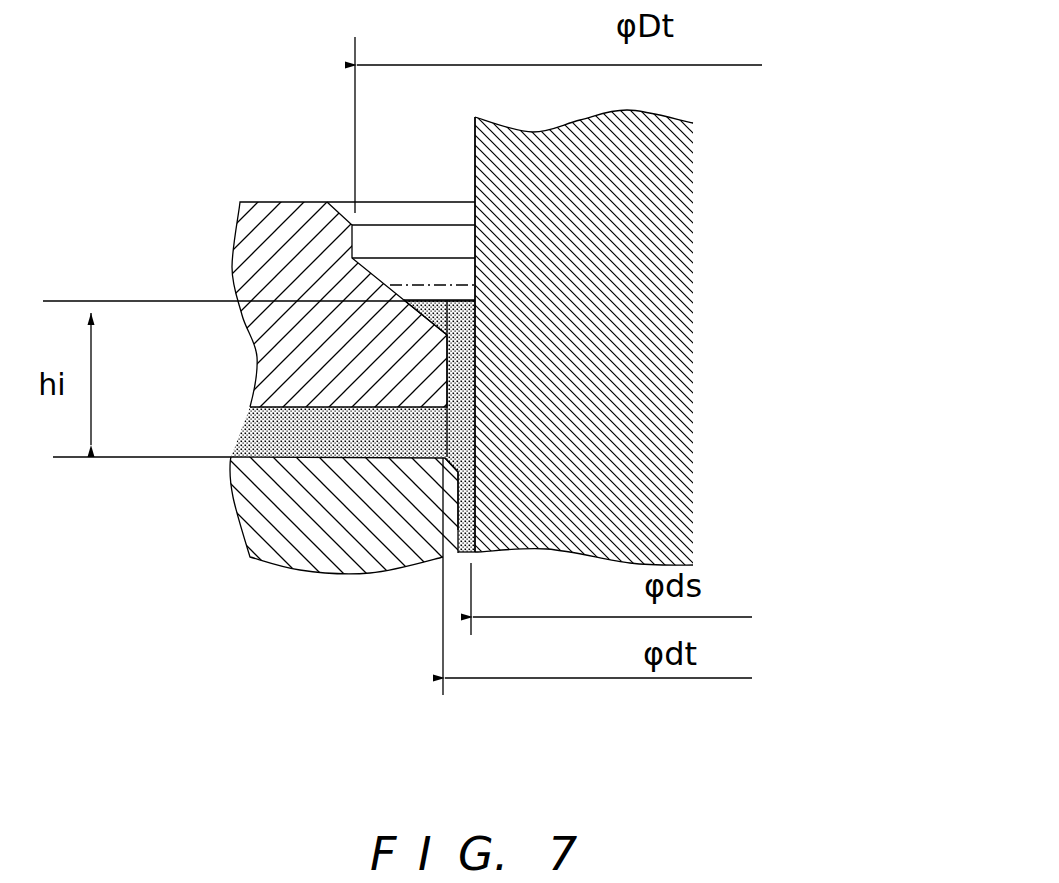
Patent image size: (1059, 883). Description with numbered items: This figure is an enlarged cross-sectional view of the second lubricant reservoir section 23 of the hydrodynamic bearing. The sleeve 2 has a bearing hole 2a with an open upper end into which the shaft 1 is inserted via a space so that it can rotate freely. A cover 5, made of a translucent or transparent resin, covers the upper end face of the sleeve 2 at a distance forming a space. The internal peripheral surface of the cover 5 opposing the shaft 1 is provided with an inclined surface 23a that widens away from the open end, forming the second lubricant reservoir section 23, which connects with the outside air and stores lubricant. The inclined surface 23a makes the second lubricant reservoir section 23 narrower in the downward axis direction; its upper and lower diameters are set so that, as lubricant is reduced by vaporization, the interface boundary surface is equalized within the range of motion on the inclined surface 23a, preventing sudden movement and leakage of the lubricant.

The shaft 1 is at (608, 180).
The sleeve 2 is at (297, 500).
The bearing hole 2a is at (452, 518).
The cover 5 is at (262, 230).
The second lubricant reservoir section 23 is at (427, 273).
The inclined surface 23a is at (445, 303).